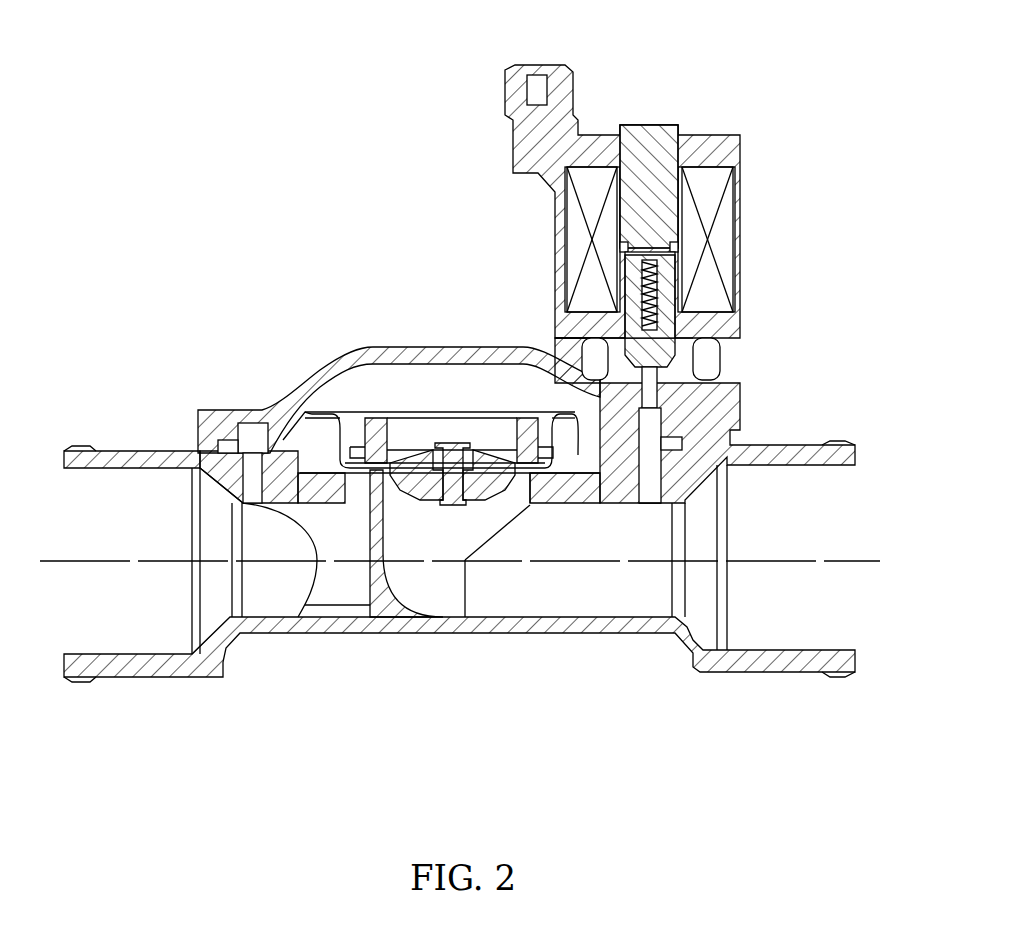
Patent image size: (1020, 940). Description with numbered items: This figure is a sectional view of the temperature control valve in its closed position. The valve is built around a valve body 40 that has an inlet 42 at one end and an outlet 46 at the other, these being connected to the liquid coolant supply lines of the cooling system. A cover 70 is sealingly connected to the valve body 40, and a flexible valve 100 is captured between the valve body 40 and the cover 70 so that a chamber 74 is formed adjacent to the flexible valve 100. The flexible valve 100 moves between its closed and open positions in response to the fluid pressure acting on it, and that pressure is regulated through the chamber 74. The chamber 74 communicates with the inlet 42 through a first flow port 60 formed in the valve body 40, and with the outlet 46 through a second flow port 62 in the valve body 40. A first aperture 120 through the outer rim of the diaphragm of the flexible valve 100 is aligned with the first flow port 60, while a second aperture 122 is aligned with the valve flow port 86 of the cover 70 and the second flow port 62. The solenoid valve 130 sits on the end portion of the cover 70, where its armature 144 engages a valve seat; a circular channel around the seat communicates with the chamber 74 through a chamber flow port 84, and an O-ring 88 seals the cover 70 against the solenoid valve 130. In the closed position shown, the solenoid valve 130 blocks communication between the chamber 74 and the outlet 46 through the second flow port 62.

The valve body 40 is at (96, 451).
The inlet 42 is at (148, 541).
The outlet 46 is at (805, 531).
The first flow port 60 is at (197, 458).
The second flow port 62 is at (645, 487).
The cover 70 is at (270, 402).
The chamber 74 is at (454, 397).
The chamber flow port 84 is at (562, 375).
The valve flow port 86 is at (653, 420).
The O-ring 88 is at (590, 345).
The flexible valve 100 is at (352, 410).
The first aperture 120 is at (250, 440).
The second aperture 122 is at (663, 443).
The solenoid valve 130 is at (742, 128).
The armature 144 is at (665, 330).